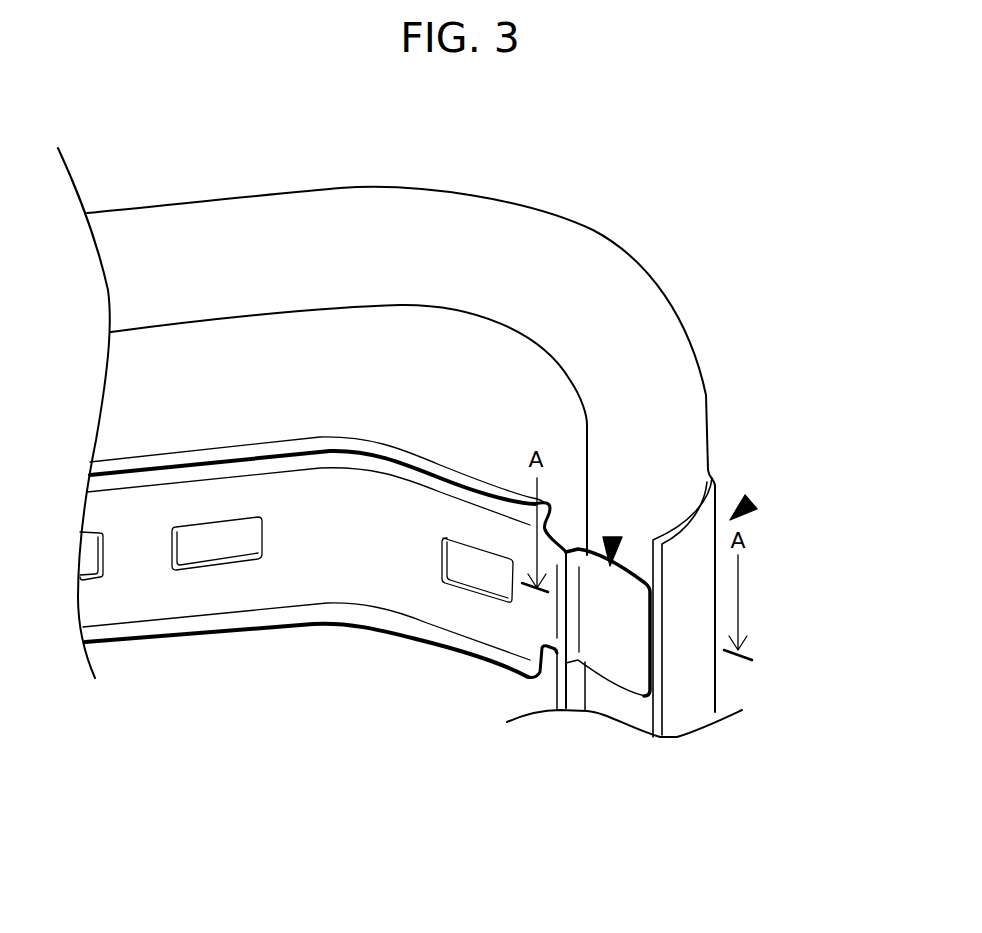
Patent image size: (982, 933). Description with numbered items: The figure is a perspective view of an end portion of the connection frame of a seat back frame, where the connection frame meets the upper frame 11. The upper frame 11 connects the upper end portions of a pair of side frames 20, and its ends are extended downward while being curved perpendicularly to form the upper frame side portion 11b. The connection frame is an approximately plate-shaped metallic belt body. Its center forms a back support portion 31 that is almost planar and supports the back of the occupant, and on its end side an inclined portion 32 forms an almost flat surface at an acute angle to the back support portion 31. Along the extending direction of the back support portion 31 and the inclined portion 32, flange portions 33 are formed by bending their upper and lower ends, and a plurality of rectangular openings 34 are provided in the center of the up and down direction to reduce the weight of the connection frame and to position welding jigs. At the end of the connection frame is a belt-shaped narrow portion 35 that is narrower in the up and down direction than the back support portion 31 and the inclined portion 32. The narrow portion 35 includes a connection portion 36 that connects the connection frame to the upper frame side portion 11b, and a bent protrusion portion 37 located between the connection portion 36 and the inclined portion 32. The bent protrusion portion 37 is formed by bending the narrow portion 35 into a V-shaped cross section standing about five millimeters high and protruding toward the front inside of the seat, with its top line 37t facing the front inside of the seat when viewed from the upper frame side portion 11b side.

The upper frame 11 is at (582, 257).
The upper frame side portion 11b is at (685, 462).
The side frame 20 is at (748, 503).
The back support portion 31 is at (132, 572).
The inclined portion 32 is at (450, 583).
The flange portion 33 is at (208, 455).
The opening 34 is at (248, 555).
The narrow portion 35 is at (612, 537).
The connection portion 36 is at (625, 677).
The bent protrusion portion 37 is at (573, 657).
The top line 37t is at (563, 575).